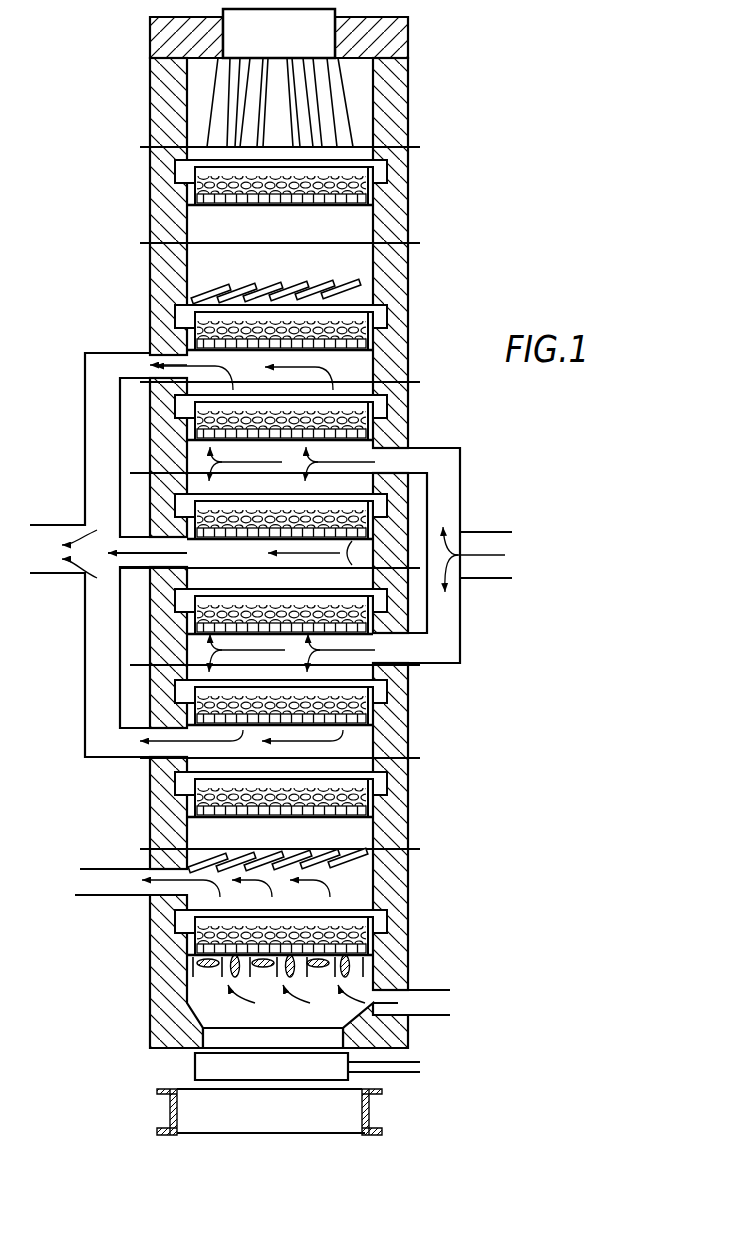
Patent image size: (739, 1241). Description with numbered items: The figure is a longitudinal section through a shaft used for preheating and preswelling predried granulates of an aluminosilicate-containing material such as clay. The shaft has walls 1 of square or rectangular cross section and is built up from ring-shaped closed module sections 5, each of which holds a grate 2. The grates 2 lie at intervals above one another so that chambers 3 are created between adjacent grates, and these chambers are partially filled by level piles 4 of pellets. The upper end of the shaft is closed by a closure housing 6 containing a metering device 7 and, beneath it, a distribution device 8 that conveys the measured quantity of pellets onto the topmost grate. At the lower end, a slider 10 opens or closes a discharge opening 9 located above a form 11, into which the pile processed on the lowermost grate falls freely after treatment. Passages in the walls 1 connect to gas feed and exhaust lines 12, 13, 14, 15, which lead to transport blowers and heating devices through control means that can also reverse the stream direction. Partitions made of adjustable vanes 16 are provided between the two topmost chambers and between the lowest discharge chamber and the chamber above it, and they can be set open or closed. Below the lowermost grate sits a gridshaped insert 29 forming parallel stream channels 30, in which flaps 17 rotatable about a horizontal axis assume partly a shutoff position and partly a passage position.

The walls 1 is at (412, 279).
The grates 2 is at (352, 218).
The chambers 3 is at (198, 258).
The piles of pellets 4 is at (355, 194).
The module sections 5 is at (173, 200).
The closure housing 6 is at (166, 100).
The metering device 7 is at (318, 38).
The distribution device 8 is at (337, 107).
The discharge opening 9 is at (212, 1037).
The slider 10 is at (212, 1063).
The form 11 is at (222, 1113).
The gas feed line 12 is at (475, 545).
The gas exhaust line 13 is at (54, 537).
The gas feed line 14 is at (428, 1012).
The gas exhaust line 15 is at (98, 878).
The vanes 16 is at (348, 278).
The flaps 17 is at (210, 968).
The gridshaped insert 29 is at (375, 963).
The parallel stream channels 30 is at (375, 980).